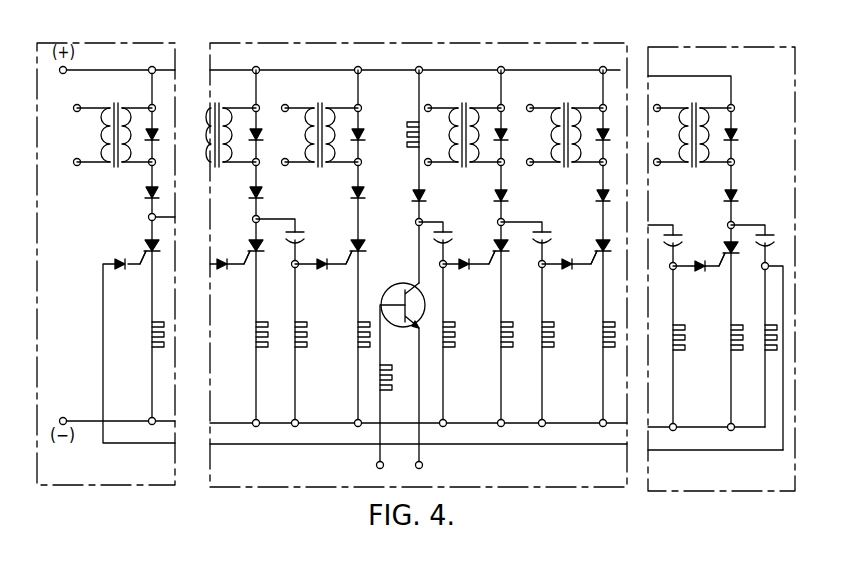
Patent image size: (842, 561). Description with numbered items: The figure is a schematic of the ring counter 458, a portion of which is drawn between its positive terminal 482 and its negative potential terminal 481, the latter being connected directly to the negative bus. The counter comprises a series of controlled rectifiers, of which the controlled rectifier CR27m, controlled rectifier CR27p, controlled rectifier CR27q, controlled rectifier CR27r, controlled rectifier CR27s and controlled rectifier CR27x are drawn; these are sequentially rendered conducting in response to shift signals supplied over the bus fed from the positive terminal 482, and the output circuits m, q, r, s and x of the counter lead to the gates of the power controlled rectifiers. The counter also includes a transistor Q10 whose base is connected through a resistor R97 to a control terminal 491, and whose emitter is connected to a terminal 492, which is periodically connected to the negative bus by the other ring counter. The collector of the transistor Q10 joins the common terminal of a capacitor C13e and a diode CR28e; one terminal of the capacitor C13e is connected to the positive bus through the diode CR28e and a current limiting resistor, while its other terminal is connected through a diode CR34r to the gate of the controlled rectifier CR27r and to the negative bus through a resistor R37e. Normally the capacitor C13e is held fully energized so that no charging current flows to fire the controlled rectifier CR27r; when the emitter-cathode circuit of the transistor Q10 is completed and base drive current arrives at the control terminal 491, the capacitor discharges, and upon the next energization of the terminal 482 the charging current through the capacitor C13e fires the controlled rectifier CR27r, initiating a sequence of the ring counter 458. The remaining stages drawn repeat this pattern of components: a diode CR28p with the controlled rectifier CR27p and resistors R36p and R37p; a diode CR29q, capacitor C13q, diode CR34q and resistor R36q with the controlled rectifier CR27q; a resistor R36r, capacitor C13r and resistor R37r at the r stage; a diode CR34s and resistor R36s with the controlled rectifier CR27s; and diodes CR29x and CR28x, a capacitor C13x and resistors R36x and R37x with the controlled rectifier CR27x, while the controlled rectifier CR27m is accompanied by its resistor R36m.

The ring counter 458 is at (335, 43).
The negative potential terminal 481 is at (63, 421).
The positive terminal 482 is at (65, 72).
The control terminal 491 is at (376, 465).
The terminal 492 is at (423, 465).
The output circuit m is at (78, 130).
The output circuit q is at (292, 134).
The output circuit r is at (434, 129).
The output circuit s is at (535, 138).
The output circuit x is at (661, 127).
The controlled rectifier CR27m is at (142, 244).
The resistor R36m is at (150, 328).
The diode CR28p is at (262, 193).
The controlled rectifier CR27p is at (248, 245).
The resistor R36p is at (250, 331).
The resistor R37p is at (312, 350).
The capacitor C13q is at (284, 238).
The diode CR29q is at (368, 131).
The controlled rectifier CR27q is at (344, 247).
The diode CR34q is at (320, 270).
The resistor R36q is at (352, 331).
The diode CR28e is at (413, 195).
The transistor Q10 is at (387, 291).
The resistor R97 is at (393, 378).
The capacitor C13e is at (443, 223).
The resistor R37e is at (463, 333).
The diode CR34r is at (471, 270).
The controlled rectifier CR27r is at (491, 248).
The resistor R36r is at (517, 333).
The capacitor C13r is at (533, 222).
The resistor R37r is at (559, 333).
The diode CR34s is at (574, 270).
The controlled rectifier CR27s is at (594, 248).
The resistor R36s is at (601, 349).
The diode CR29x is at (739, 142).
The diode CR28x is at (755, 192).
The controlled rectifier CR27x is at (721, 247).
The resistor R36x is at (728, 333).
The capacitor C13x is at (780, 242).
The resistor R37x is at (763, 352).